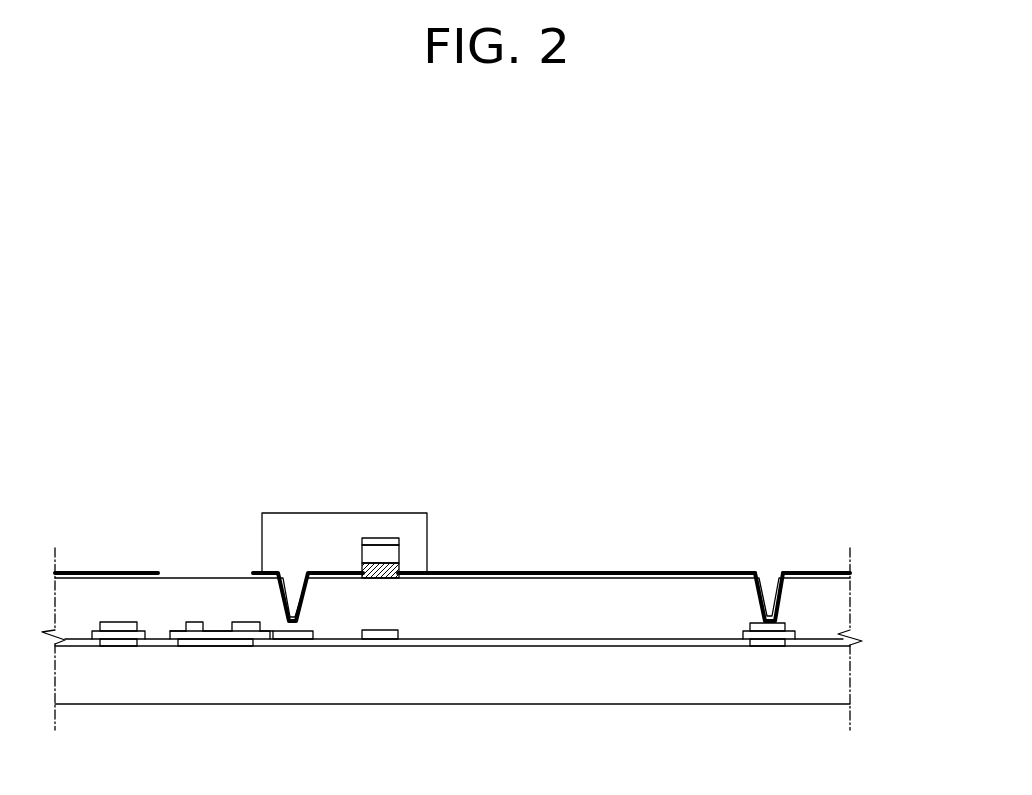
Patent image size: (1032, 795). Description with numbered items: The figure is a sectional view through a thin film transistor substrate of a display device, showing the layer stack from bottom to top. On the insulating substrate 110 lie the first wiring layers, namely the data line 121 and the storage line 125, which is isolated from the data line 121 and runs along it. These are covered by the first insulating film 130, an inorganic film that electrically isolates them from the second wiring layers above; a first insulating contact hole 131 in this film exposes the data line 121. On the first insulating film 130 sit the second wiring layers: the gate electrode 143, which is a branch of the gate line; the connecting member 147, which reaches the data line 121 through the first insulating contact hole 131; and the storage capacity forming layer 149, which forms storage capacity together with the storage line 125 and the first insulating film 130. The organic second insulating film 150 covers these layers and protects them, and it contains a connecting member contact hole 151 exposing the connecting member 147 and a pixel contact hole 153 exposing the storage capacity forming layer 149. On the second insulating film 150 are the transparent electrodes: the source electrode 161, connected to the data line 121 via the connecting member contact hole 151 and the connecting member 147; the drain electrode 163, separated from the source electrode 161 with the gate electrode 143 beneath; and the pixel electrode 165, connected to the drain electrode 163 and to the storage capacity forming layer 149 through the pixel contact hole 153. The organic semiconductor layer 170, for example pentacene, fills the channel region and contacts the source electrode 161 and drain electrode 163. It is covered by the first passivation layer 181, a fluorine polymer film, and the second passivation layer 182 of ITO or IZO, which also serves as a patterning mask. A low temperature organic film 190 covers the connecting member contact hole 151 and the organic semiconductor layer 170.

The insulating substrate 110 is at (840, 680).
The data line 121 is at (212, 646).
The storage line 125 is at (122, 646).
The first insulating film 130 is at (482, 646).
The first insulating contact hole 131 is at (216, 627).
The gate electrode 143 is at (383, 639).
The connecting member 147 is at (272, 639).
The storage capacity forming layer 149 is at (136, 631).
The second insulating film 150 is at (80, 637).
The connecting member contact hole 151 is at (292, 580).
The pixel contact hole 153 is at (768, 580).
The source electrode 161 is at (331, 579).
The drain electrode 163 is at (427, 579).
The pixel electrode 165 is at (118, 570).
The organic semiconductor layer 170 is at (402, 568).
The first passivation layer 181 is at (392, 552).
The second passivation layer 182 is at (377, 538).
The low temperature organic film 190 is at (335, 523).